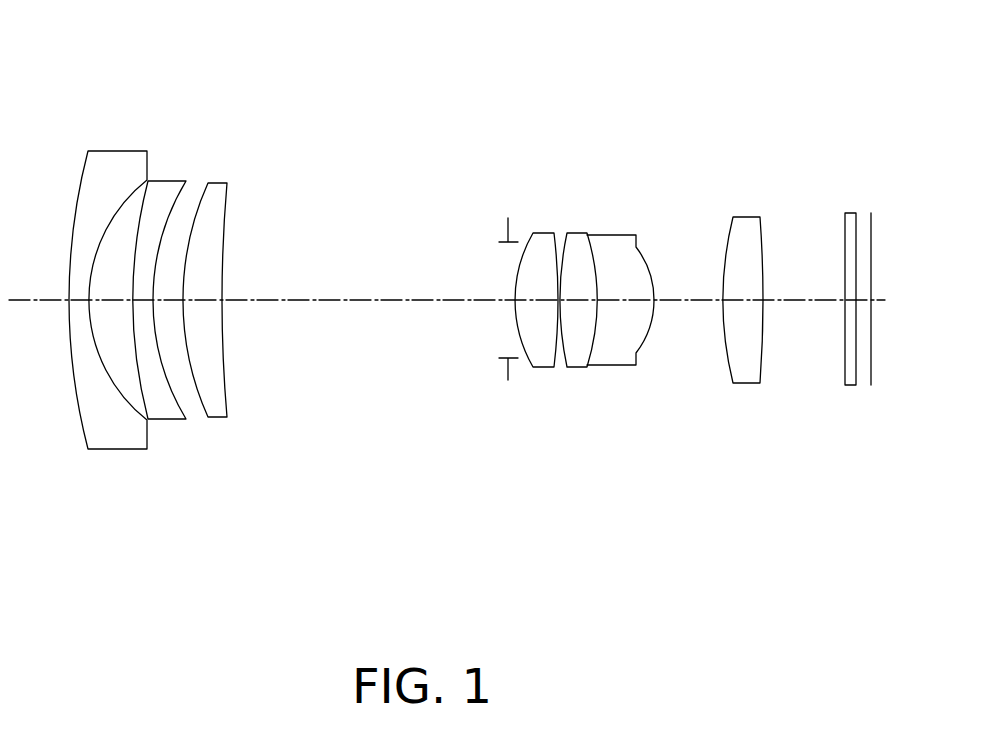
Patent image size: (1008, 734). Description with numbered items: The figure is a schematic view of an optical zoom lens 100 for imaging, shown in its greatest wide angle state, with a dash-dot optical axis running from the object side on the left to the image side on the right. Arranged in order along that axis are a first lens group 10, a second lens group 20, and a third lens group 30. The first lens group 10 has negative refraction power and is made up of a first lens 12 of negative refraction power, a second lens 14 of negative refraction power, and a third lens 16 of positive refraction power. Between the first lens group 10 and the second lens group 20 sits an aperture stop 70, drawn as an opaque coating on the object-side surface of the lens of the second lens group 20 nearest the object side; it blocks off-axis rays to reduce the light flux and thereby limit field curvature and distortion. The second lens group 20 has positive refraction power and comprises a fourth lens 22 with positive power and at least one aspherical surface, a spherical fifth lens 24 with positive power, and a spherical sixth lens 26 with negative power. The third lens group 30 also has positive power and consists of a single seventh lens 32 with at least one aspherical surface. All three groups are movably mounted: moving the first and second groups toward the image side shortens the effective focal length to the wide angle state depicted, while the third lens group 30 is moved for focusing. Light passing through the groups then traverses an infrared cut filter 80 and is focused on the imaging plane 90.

The optical zoom lens 100 is at (245, 103).
The first lens group 10 is at (280, 523).
The first lens 12 is at (115, 438).
The second lens 14 is at (172, 413).
The third lens 16 is at (213, 371).
The aperture stop 70 is at (508, 370).
The second lens group 20 is at (680, 457).
The fourth lens 22 is at (543, 347).
The fifth lens 24 is at (578, 348).
The sixth lens 26 is at (618, 347).
The third lens group 30 is at (749, 206).
The seventh lens 32 is at (750, 367).
The infrared cut filter 80 is at (850, 367).
The imaging plane 90 is at (870, 367).